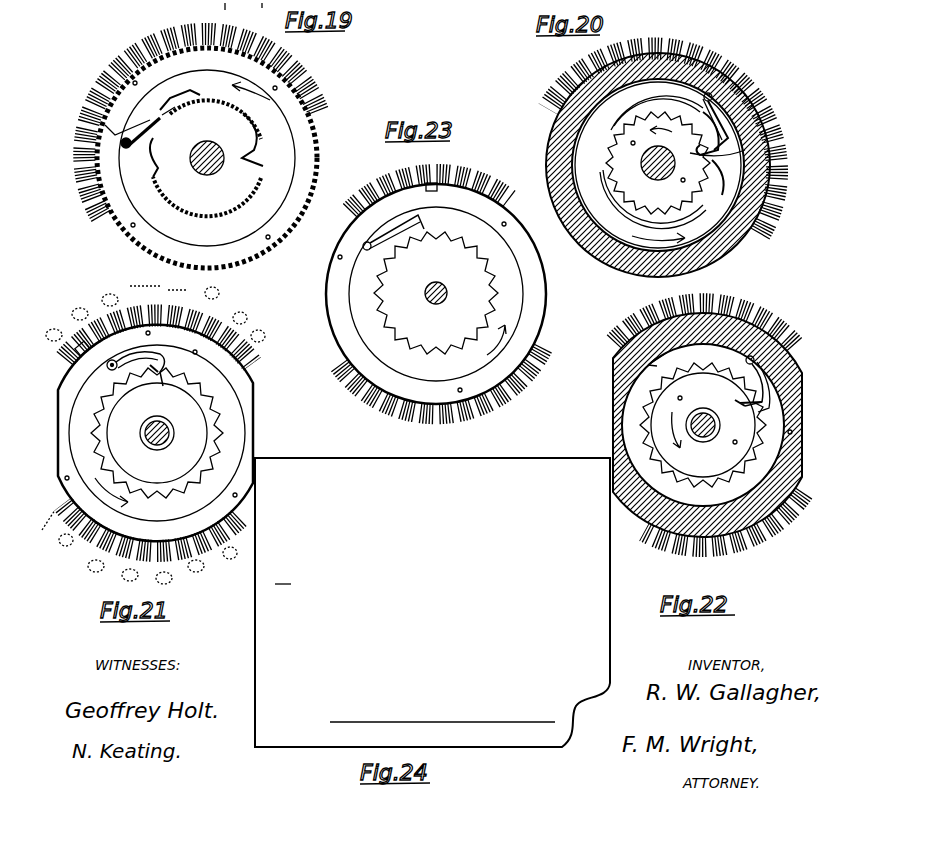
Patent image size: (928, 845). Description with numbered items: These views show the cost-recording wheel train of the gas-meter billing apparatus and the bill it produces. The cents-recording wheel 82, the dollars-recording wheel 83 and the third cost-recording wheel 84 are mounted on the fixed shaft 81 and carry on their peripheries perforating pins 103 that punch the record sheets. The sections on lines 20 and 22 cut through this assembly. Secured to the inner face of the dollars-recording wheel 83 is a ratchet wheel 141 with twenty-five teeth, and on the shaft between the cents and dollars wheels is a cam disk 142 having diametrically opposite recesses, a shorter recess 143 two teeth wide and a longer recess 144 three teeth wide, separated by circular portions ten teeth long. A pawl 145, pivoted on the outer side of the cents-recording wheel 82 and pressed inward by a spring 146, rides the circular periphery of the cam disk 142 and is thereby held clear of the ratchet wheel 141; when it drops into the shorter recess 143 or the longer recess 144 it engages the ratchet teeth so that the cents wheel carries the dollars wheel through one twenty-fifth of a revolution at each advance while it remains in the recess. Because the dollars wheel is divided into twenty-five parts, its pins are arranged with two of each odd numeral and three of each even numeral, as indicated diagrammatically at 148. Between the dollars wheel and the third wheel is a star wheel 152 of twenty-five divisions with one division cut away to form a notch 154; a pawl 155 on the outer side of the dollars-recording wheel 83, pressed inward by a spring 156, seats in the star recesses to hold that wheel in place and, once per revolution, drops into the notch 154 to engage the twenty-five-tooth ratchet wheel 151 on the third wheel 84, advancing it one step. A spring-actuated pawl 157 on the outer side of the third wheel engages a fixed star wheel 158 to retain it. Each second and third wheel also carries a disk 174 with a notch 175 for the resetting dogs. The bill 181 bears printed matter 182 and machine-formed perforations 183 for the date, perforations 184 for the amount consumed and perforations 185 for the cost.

In FIG. 19, the section line 20 is at (257, 15).
In FIG. 19, the section line 22 is at (223, 15).
In FIG. 23, the fixed shaft 81 is at (424, 291).
In FIG. 19, the cents-recording wheel 82 is at (207, 158).
In FIG. 20, the cents-recording wheel 82 is at (740, 245).
In FIG. 21, the dollars-recording wheel 83 is at (230, 400).
In FIG. 22, the dollars-recording wheel 83 is at (788, 477).
In FIG. 23, the third cost-recording wheel 84 is at (510, 311).
In FIG. 19, the perforating pins 103 is at (118, 78).
In FIG. 20, the ratchet wheel 141 is at (658, 163).
In FIG. 19, the cam disk 142 is at (211, 149).
In FIG. 20, the cam disk 142 is at (630, 114).
In FIG. 19, the shorter recess 143 is at (256, 152).
In FIG. 20, the shorter recess 143 is at (715, 158).
In FIG. 19, the longer recess 144 is at (163, 168).
In FIG. 20, the longer recess 144 is at (642, 197).
In FIG. 19, the pawl 145 is at (165, 105).
In FIG. 20, the pawl 145 is at (696, 118).
In FIG. 19, the spring 146 is at (180, 85).
In FIG. 20, the spring 146 is at (770, 128).
In FIG. 21, the arrangement of pins 148 is at (236, 308).
In FIG. 22, the ratchet wheel 151 is at (703, 425).
In FIG. 21, the star wheel 152 is at (157, 433).
In FIG. 22, the star wheel 152 is at (640, 422).
In FIG. 21, the notch 154 is at (178, 386).
In FIG. 21, the pawl 155 is at (150, 375).
In FIG. 22, the pawl 155 is at (762, 405).
In FIG. 21, the spring 156 is at (160, 350).
In FIG. 22, the spring 156 is at (780, 384).
In FIG. 23, the pawl 157 is at (428, 224).
In FIG. 23, the fixed star wheel 158 is at (436, 293).
In FIG. 23, the disk 174 is at (532, 257).
In FIG. 21, the disk 174 is at (157, 441).
In FIG. 23, the notch 175 is at (458, 167).
In FIG. 21, the notch 175 is at (80, 345).
In FIG. 24, the bill 181 is at (432, 602).
In FIG. 24, the printed matter 182 is at (545, 605).
In FIG. 24, the perforations 183 is at (395, 480).
In FIG. 24, the perforations 184 is at (360, 682).
In FIG. 24, the perforations 185 is at (544, 684).